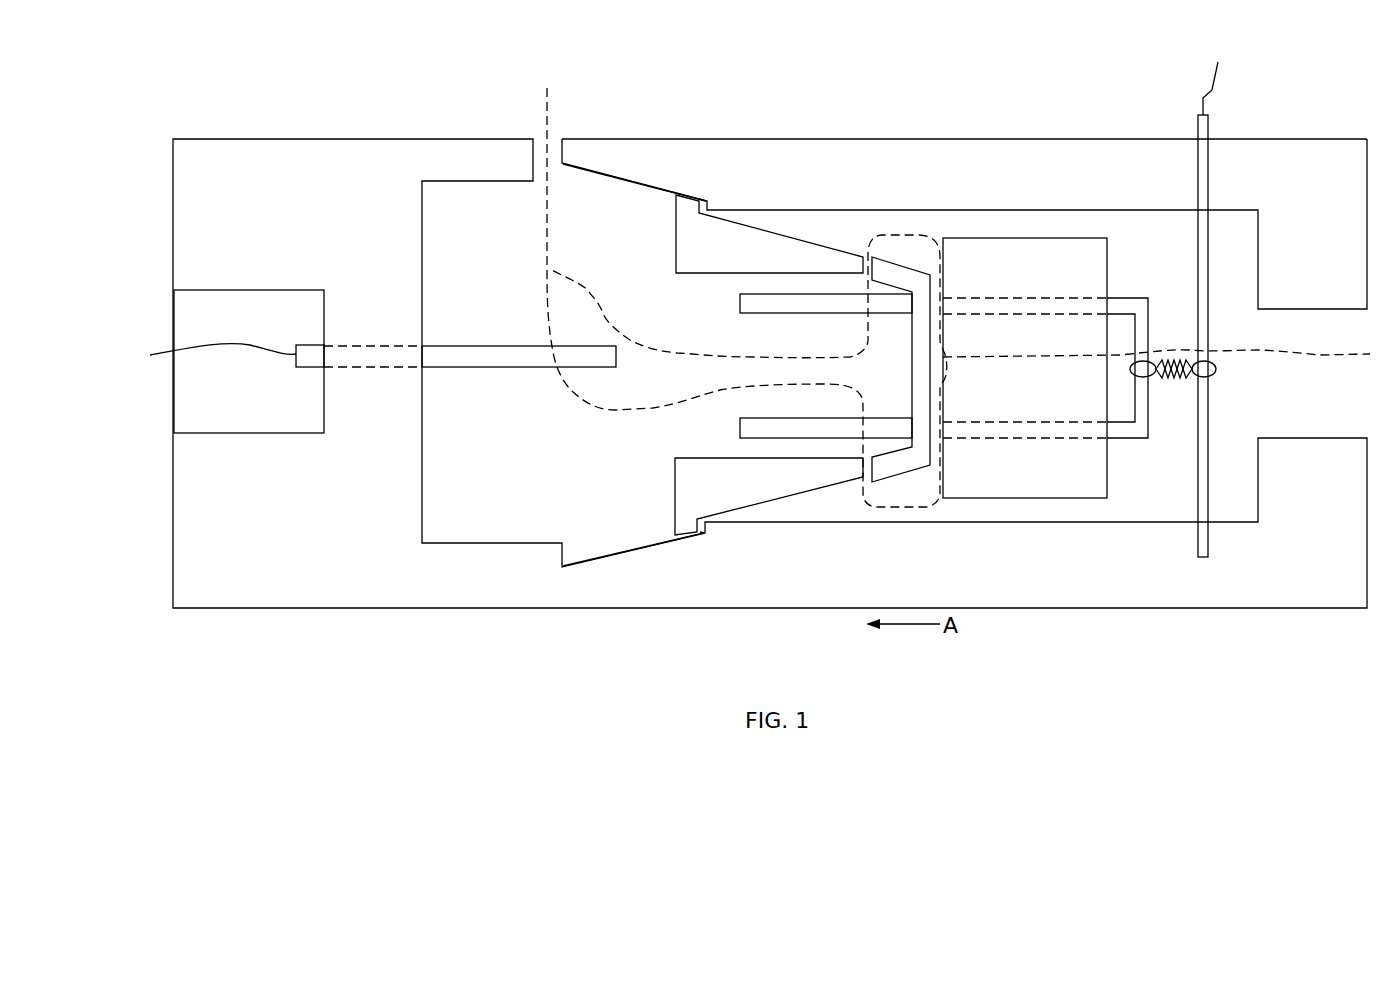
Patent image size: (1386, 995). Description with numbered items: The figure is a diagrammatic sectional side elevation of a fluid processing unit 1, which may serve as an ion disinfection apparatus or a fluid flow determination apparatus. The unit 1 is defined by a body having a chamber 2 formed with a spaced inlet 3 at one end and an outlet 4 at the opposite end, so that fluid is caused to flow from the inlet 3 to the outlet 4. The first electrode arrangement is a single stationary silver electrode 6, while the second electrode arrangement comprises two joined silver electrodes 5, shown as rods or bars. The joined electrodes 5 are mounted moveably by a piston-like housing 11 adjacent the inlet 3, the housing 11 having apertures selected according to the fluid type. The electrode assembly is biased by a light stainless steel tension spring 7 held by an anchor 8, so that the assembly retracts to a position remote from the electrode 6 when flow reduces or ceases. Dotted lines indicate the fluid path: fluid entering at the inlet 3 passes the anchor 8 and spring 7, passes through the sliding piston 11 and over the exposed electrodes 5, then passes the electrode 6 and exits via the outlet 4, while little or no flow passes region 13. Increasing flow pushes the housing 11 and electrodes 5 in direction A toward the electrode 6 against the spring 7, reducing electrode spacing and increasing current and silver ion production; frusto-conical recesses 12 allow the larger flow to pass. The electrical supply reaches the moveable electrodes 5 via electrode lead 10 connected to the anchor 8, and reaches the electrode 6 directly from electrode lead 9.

The fluid processing unit 1 is at (735, 128).
The chamber 2 is at (466, 233).
The inlet 3 is at (1320, 357).
The outlet 4 is at (530, 110).
The joined electrodes 5 is at (800, 393).
The silver electrode 6 is at (520, 380).
The spring 7 is at (1168, 340).
The anchor 8 is at (1225, 430).
The electrode lead 9 is at (158, 372).
The electrode lead 10 is at (1233, 80).
The housing 11 is at (732, 238).
The recesses 12 is at (638, 196).
The region 13 is at (690, 180).